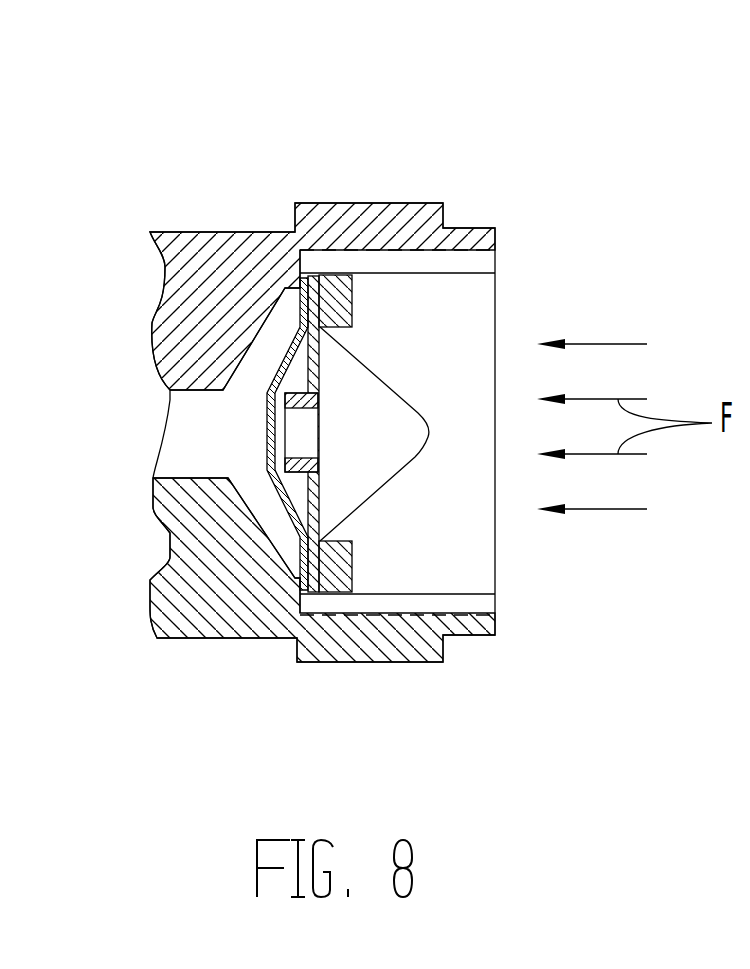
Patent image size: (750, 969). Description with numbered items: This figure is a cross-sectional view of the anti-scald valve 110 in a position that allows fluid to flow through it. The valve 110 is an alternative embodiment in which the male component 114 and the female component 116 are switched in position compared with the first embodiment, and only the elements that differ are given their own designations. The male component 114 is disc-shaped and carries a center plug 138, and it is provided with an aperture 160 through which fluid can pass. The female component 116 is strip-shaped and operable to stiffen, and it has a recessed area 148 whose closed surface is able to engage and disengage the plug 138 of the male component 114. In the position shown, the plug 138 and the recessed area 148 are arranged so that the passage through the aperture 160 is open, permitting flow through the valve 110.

The valve 110 is at (382, 135).
The male component 114 is at (320, 498).
The female component 116 is at (268, 441).
The center plug 138 is at (405, 538).
The recessed area 148 is at (273, 497).
The aperture 160 is at (305, 433).